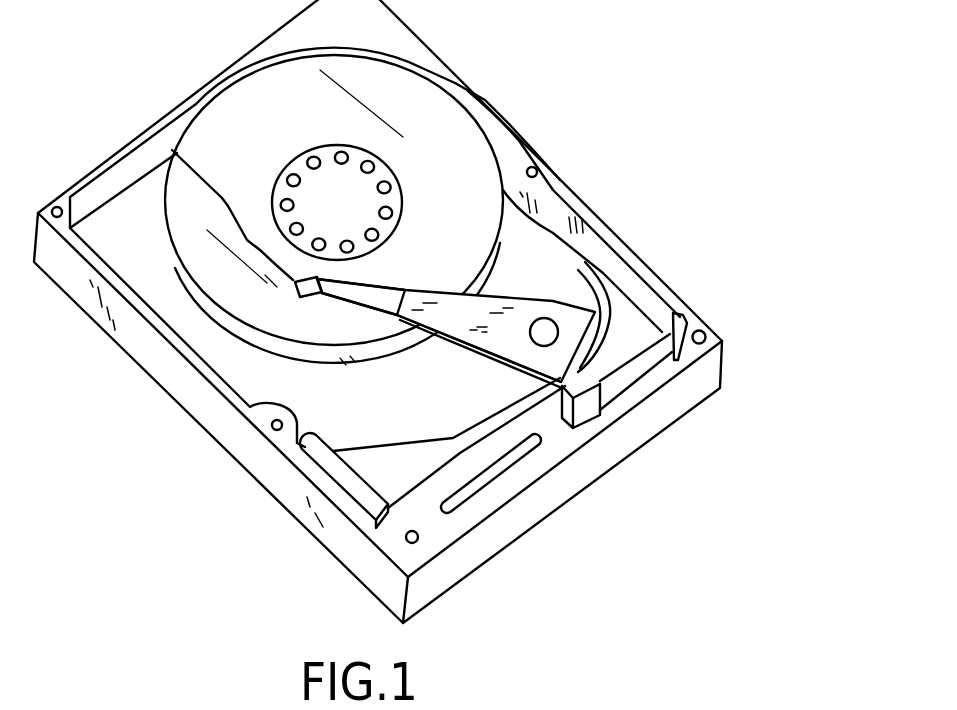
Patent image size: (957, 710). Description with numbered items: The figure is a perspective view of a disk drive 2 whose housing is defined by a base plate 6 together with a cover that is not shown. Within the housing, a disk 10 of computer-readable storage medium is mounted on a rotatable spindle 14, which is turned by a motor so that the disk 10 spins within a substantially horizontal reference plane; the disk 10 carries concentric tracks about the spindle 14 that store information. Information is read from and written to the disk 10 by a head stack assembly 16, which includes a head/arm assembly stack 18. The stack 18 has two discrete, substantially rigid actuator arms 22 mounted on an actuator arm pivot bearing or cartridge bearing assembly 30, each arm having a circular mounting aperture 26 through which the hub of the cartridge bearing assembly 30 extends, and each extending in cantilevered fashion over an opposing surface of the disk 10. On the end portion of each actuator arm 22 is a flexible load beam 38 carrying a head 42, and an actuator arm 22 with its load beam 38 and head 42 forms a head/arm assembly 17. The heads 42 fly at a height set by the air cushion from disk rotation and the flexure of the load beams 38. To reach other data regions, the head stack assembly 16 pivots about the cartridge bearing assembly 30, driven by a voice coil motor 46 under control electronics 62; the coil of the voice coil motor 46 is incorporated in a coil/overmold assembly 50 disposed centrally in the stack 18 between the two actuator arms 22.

The disk drive 2 is at (643, 103).
The base plate 6 is at (725, 365).
The disk 10 is at (453, 135).
The spindle 14 is at (370, 185).
The head stack assembly 16 is at (483, 370).
The head/arm assembly 17 is at (414, 284).
The head/arm assembly stack 18 is at (522, 310).
The actuator arm 22 is at (560, 279).
The circular mounting aperture 26 is at (620, 253).
The cartridge bearing assembly 30 is at (556, 322).
The load beam 38 is at (377, 300).
The head 42 is at (177, 153).
The voice coil motor 46 is at (640, 347).
The coil/overmold assembly 50 is at (603, 333).
The control electronics 62 is at (345, 473).